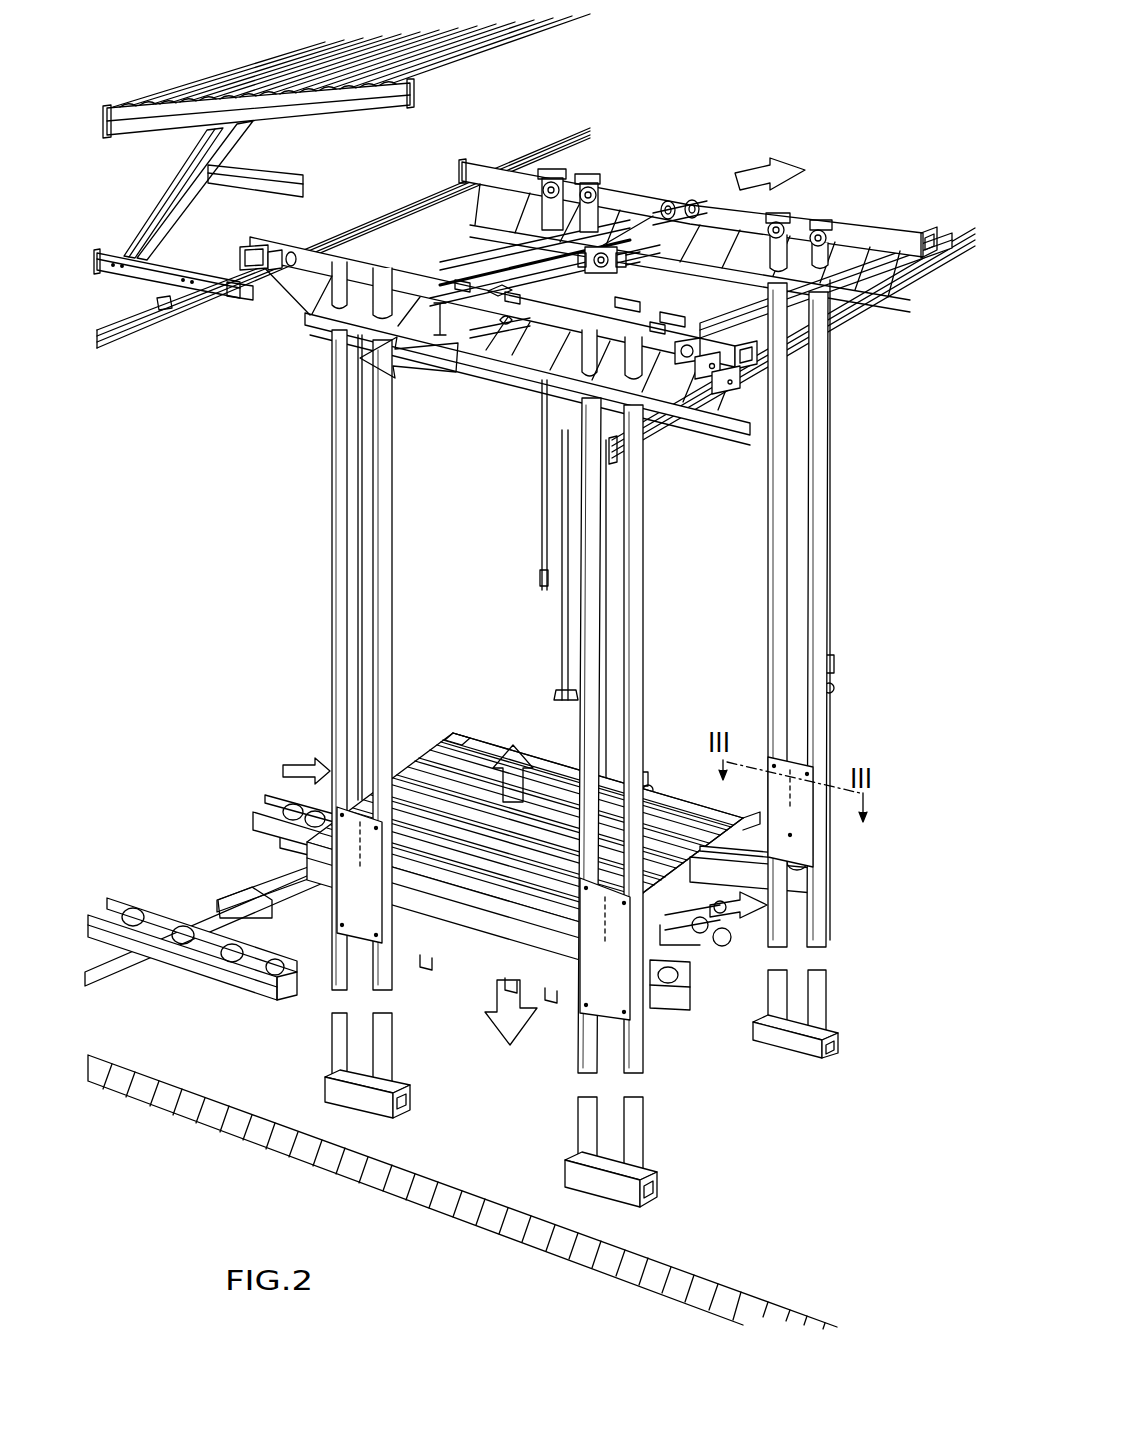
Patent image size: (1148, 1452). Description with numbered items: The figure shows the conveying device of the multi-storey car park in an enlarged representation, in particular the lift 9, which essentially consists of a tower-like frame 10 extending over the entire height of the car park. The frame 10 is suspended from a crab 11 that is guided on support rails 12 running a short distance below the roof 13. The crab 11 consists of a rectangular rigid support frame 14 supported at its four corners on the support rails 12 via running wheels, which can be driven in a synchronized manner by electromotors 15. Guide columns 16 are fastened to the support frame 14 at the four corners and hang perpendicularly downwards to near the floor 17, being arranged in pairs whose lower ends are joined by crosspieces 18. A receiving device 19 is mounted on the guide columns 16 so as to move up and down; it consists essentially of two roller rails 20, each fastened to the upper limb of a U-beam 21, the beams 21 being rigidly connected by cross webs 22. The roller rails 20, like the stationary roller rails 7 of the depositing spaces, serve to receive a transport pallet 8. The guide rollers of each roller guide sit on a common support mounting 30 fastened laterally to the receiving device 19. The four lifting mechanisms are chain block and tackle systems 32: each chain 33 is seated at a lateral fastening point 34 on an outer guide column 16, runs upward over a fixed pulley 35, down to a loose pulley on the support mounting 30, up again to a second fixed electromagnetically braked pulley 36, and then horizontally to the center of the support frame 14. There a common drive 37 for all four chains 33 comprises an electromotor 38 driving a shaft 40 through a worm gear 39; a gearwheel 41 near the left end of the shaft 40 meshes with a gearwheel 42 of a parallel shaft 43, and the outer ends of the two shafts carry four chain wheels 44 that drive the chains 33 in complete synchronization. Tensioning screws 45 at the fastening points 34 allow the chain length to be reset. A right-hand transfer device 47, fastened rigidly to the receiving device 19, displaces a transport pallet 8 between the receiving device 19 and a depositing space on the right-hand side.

The roller rails 7 is at (242, 980).
The transport pallet 8 is at (472, 900).
The lift 9 is at (307, 600).
The tower-like frame 10 is at (332, 486).
The crab 11 is at (852, 222).
The support rails 12 is at (540, 165).
The roof 13 is at (510, 65).
The support frame 14 is at (512, 158).
The electromotors 15 is at (290, 265).
The guide columns 16 is at (583, 1148).
The floor 17 is at (190, 1112).
The crosspieces 18 is at (408, 1093).
The receiving device 19 is at (438, 953).
The roller rails 20 is at (793, 860).
The U-beam 21 is at (810, 880).
The cross webs 22 is at (547, 990).
The support mounting 30 is at (350, 868).
The chain block and tackle systems 32 is at (617, 663).
The chains 33 is at (605, 580).
The fastening points 34 is at (835, 676).
The fixed pulley 35 is at (549, 186).
The second fixed electromagnetically braked pulley 36 is at (582, 176).
The common drive 37 is at (617, 247).
The electromotor 38 is at (627, 267).
The worm gear 39 is at (597, 247).
The shaft 40 is at (655, 225).
The gearwheel 41 is at (517, 297).
The gearwheel 42 is at (495, 290).
The parallel shaft 43 is at (550, 265).
The chain wheels 44 is at (673, 203).
The tensioning screws 45 is at (826, 656).
The transfer device 47 is at (727, 937).